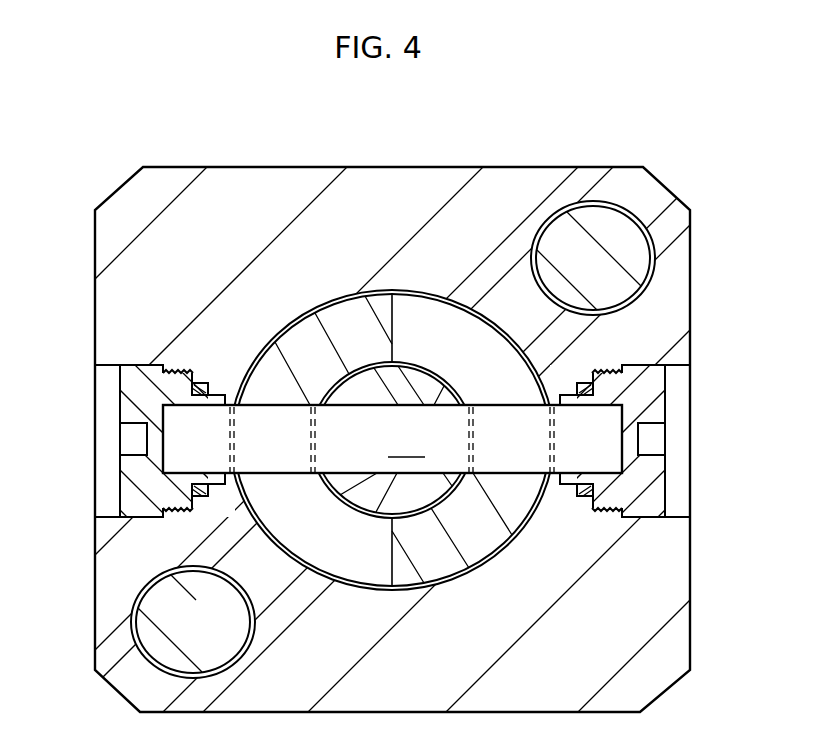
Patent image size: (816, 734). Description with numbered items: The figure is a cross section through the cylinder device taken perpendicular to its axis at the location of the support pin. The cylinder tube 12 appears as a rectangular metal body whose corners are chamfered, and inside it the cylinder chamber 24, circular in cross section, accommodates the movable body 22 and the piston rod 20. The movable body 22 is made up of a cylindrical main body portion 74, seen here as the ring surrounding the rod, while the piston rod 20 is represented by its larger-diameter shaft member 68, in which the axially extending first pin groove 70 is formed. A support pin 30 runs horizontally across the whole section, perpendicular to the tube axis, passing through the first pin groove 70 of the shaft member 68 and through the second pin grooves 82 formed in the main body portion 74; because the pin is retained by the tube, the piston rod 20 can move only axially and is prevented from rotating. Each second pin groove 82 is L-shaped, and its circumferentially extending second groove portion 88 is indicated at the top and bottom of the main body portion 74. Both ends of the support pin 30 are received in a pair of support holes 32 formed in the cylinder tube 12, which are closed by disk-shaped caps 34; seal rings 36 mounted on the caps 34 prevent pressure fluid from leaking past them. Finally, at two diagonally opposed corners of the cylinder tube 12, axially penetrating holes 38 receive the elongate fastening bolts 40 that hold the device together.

The cylinder tube 12 is at (566, 163).
The piston rod 20 is at (417, 394).
The movable body 22 is at (335, 329).
The cylinder chamber 24 is at (331, 563).
The support pin 30 is at (497, 420).
The support holes 32 is at (112, 377).
The caps 34 is at (652, 405).
The seal rings 36 is at (583, 503).
The penetrating holes 38 is at (532, 252).
The fastening bolts 40 is at (615, 290).
The shaft member 68 is at (347, 488).
The first pin groove 70 is at (374, 408).
The main body portion 74 is at (483, 541).
The second pin grooves 82 is at (478, 346).
The second groove portion 88 is at (410, 315).